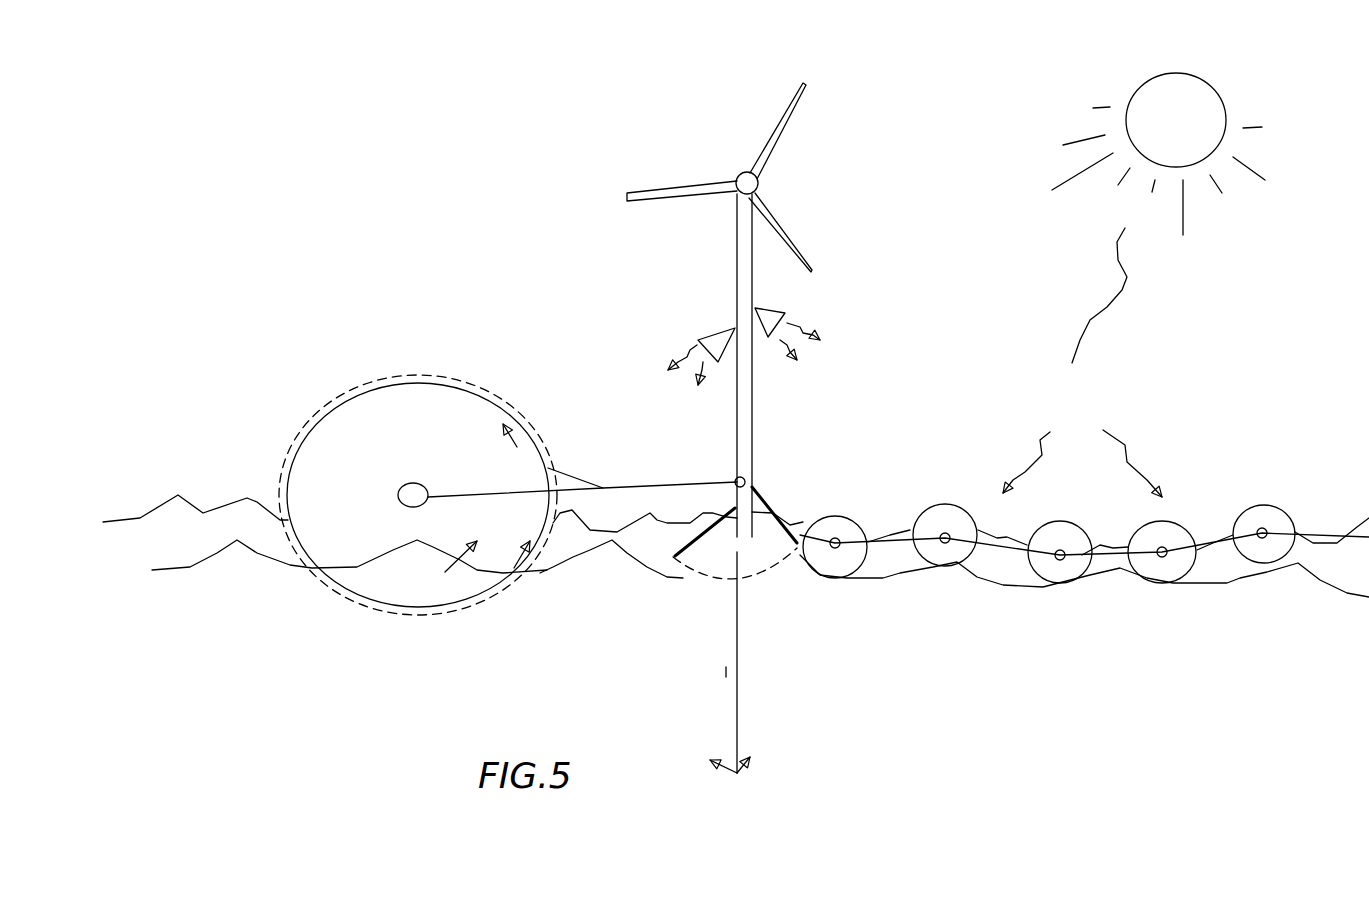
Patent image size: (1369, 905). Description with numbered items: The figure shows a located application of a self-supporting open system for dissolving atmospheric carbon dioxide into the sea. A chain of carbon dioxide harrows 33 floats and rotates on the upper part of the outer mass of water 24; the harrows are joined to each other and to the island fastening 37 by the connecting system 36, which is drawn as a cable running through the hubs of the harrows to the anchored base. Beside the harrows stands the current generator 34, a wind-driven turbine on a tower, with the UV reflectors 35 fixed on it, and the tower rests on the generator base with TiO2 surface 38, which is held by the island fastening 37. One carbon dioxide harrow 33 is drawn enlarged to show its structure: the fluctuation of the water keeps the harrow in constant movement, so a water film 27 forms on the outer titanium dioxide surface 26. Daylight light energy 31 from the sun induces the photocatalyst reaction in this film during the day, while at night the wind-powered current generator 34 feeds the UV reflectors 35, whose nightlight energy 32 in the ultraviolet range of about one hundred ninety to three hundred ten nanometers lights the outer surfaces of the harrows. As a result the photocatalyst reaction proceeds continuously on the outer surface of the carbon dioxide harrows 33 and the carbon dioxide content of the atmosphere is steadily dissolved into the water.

The outer mass of water 24 is at (736, 554).
The outer titanium dioxide surface 26 is at (334, 418).
The water film 27 is at (464, 387).
The daylight light energy 31 is at (1134, 285).
The nightlight energy 32 is at (551, 437).
The carbon dioxide harrows 33 is at (334, 458).
The current generator 34 is at (726, 161).
The UV reflectors 35 is at (801, 305).
The connecting system 36 is at (619, 472).
The island fastening 37 is at (705, 662).
The generator base with TiO2 surface 38 is at (688, 568).